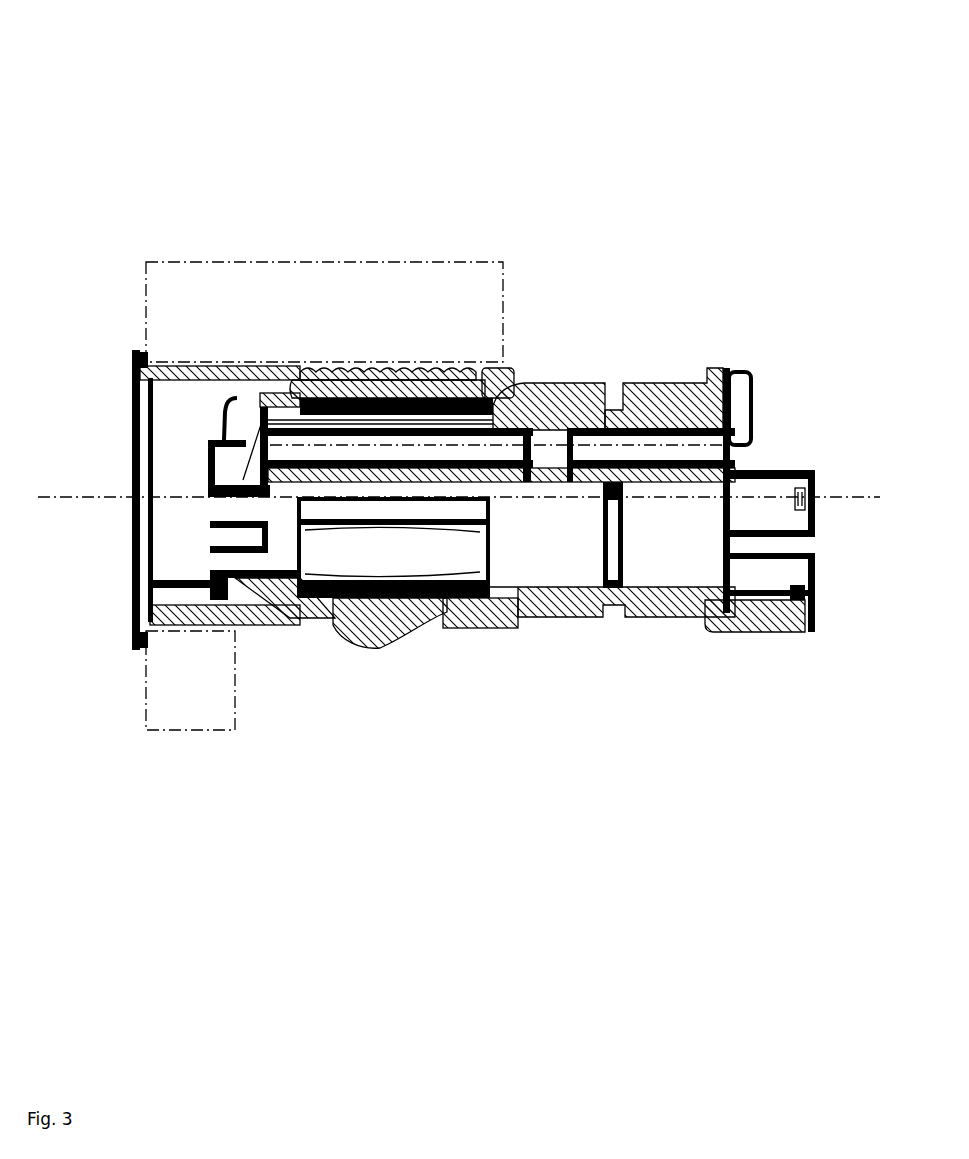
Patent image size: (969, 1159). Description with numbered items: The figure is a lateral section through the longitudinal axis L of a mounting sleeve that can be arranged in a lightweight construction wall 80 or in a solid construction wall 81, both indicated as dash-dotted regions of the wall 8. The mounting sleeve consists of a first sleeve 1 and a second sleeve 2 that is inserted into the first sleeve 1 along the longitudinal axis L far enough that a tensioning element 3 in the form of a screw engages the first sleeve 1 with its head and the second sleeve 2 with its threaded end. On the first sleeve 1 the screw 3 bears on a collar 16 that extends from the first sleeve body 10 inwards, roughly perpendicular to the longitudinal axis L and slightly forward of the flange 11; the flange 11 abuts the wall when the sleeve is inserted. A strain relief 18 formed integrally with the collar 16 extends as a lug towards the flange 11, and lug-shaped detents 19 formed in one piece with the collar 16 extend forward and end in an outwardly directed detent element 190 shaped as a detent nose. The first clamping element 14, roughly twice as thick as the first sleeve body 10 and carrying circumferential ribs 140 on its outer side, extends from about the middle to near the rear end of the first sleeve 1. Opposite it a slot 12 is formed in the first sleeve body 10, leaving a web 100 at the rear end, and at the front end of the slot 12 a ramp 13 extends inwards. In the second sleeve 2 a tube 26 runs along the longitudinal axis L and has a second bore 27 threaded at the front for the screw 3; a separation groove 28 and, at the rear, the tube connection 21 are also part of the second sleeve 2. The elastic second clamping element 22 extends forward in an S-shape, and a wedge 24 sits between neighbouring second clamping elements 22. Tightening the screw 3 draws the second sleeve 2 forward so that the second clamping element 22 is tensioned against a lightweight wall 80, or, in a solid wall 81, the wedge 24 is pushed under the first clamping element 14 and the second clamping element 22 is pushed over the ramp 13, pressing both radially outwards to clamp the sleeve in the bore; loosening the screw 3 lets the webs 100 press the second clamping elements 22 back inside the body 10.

The first sleeve 1 is at (337, 138).
The second sleeve 2 is at (633, 138).
The tensioning element 3 is at (228, 420).
The wall 8 is at (124, 806).
The first sleeve body 10 is at (230, 365).
The flange 11 is at (132, 352).
The slot 12 is at (305, 630).
The ramp 13 is at (255, 630).
The first clamping element 14 is at (378, 365).
The rib 140 is at (412, 365).
The collar 16 is at (284, 392).
The strain relief 18 is at (208, 462).
The detent 19 is at (212, 524).
The detent element 190 is at (215, 572).
The tube connection 21 is at (580, 607).
The second clamping element 22 is at (388, 650).
The wedge 24 is at (543, 381).
The tube 26 is at (700, 455).
The second bore 27 is at (705, 447).
The separation groove 28 is at (615, 381).
The lightweight construction wall 80 is at (220, 715).
The solid construction wall 81 is at (485, 277).
The web 100 is at (483, 633).
The longitudinal axis L is at (857, 500).